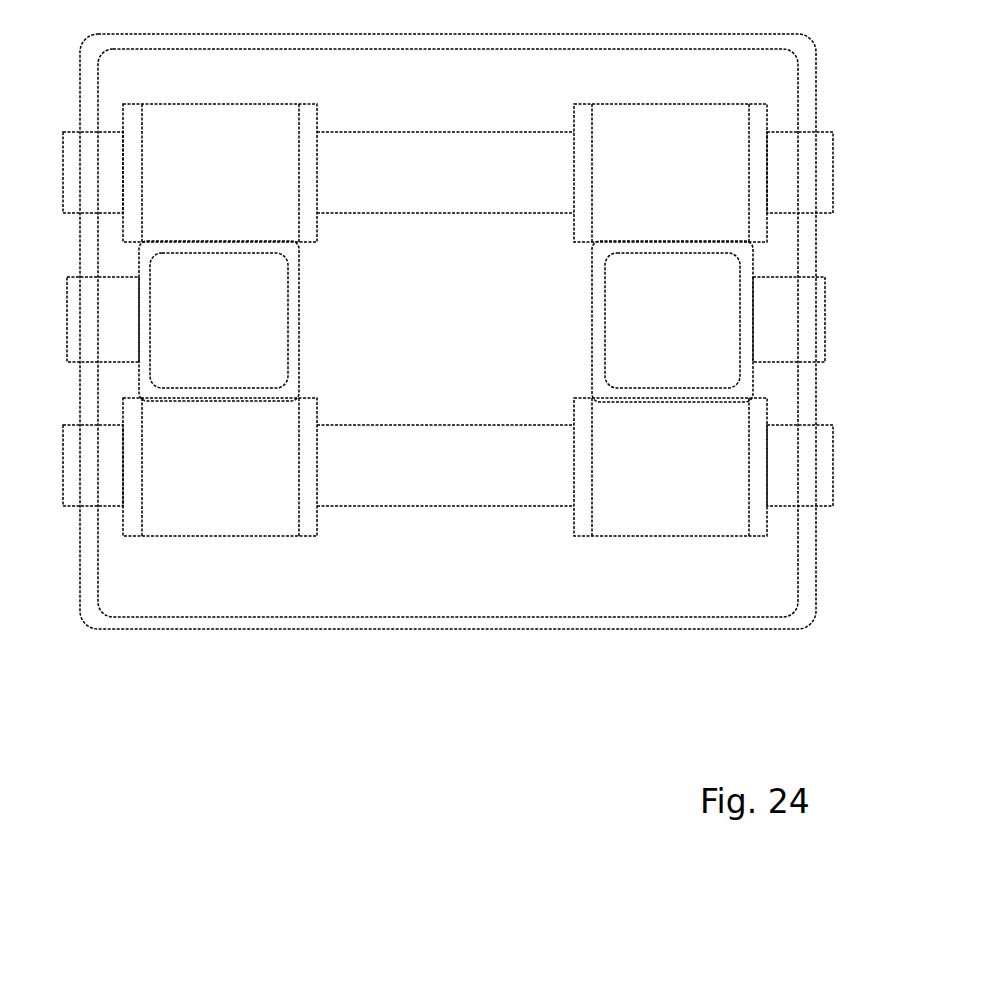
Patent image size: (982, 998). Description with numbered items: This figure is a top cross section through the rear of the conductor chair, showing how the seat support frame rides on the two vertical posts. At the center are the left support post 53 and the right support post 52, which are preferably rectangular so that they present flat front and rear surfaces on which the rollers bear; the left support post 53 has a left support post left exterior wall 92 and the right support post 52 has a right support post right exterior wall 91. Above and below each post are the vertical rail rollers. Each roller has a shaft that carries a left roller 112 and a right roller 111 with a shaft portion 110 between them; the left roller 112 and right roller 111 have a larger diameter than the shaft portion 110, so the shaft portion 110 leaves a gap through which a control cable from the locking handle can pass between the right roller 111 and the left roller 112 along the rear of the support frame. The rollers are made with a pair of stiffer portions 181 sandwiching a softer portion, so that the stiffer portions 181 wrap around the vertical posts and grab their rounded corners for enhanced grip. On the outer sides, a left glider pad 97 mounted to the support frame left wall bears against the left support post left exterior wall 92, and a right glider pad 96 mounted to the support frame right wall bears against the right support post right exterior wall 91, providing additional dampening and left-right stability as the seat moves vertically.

The stiffer portions 181 is at (130, 118).
The left roller 112 is at (197, 505).
The right roller 111 is at (662, 487).
The shaft portion 110 is at (415, 481).
The left support post left exterior wall 92 is at (138, 252).
The right support post right exterior wall 91 is at (752, 253).
The left support post 53 is at (262, 323).
The right support post 52 is at (635, 310).
The left glider pad 97 is at (118, 318).
The right glider pad 96 is at (785, 317).